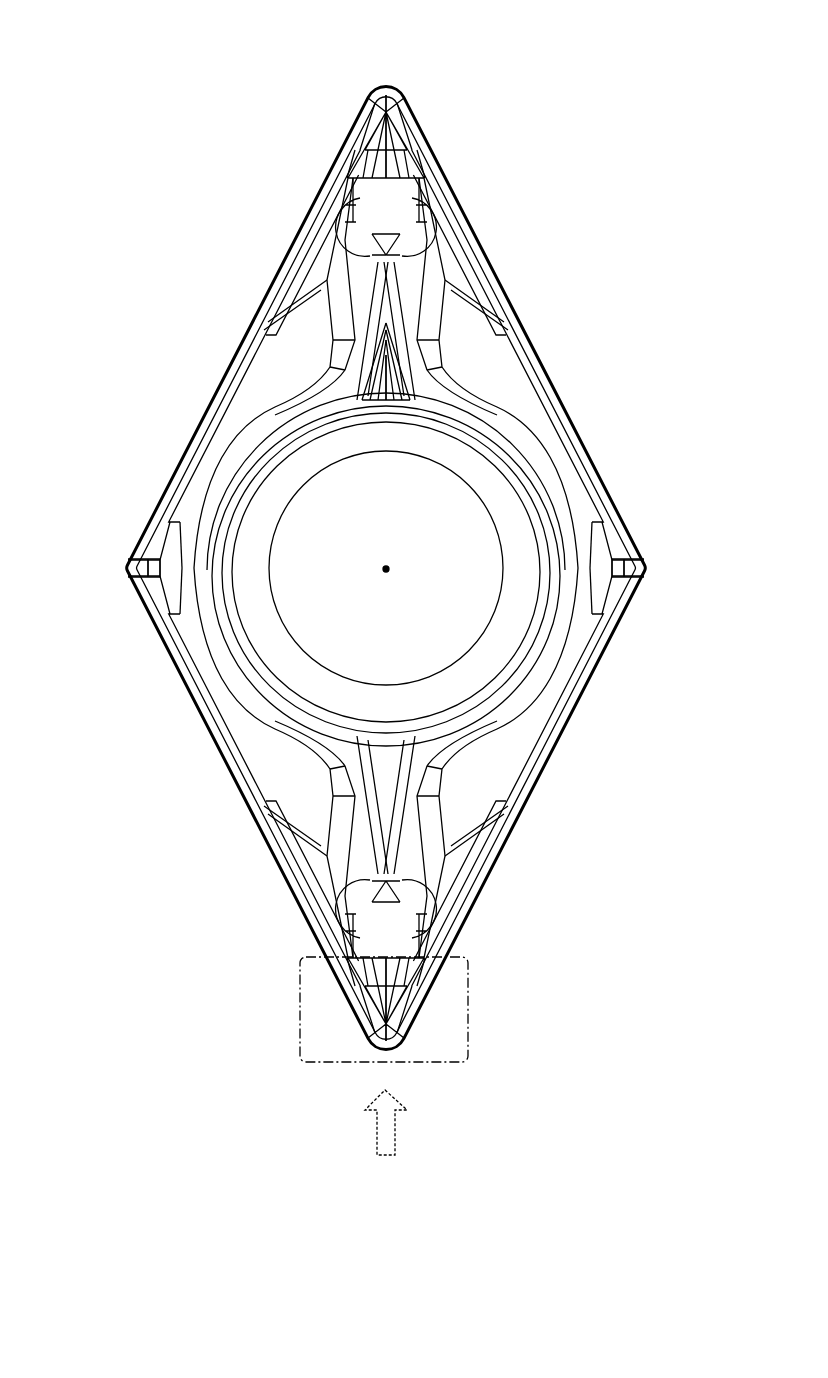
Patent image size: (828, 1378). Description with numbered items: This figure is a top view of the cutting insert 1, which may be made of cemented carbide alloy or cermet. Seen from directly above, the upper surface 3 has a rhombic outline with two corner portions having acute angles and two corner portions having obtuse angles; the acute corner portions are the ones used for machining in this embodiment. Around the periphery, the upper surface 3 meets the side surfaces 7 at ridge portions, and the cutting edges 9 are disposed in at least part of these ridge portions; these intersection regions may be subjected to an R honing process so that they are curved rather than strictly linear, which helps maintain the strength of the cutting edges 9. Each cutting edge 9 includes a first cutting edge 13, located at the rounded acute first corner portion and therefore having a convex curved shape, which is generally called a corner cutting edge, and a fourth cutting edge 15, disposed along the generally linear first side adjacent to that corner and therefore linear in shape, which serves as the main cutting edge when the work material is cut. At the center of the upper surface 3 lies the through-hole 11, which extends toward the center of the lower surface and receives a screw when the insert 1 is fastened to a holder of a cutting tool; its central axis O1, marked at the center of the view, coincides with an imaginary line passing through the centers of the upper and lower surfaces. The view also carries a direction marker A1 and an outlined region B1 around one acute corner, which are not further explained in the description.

The insert 1 is at (214, 254).
The upper surface 3 is at (490, 360).
The side surfaces 7 is at (240, 806).
The cutting edges 9 is at (386, 568).
The through-hole 11 is at (313, 653).
The first cutting edge 13 is at (388, 92).
The fourth cutting edge 15 is at (337, 148).
The central axis O1 is at (390, 566).
The viewing direction A1 is at (386, 1143).
The enlarged region B1 is at (470, 1062).